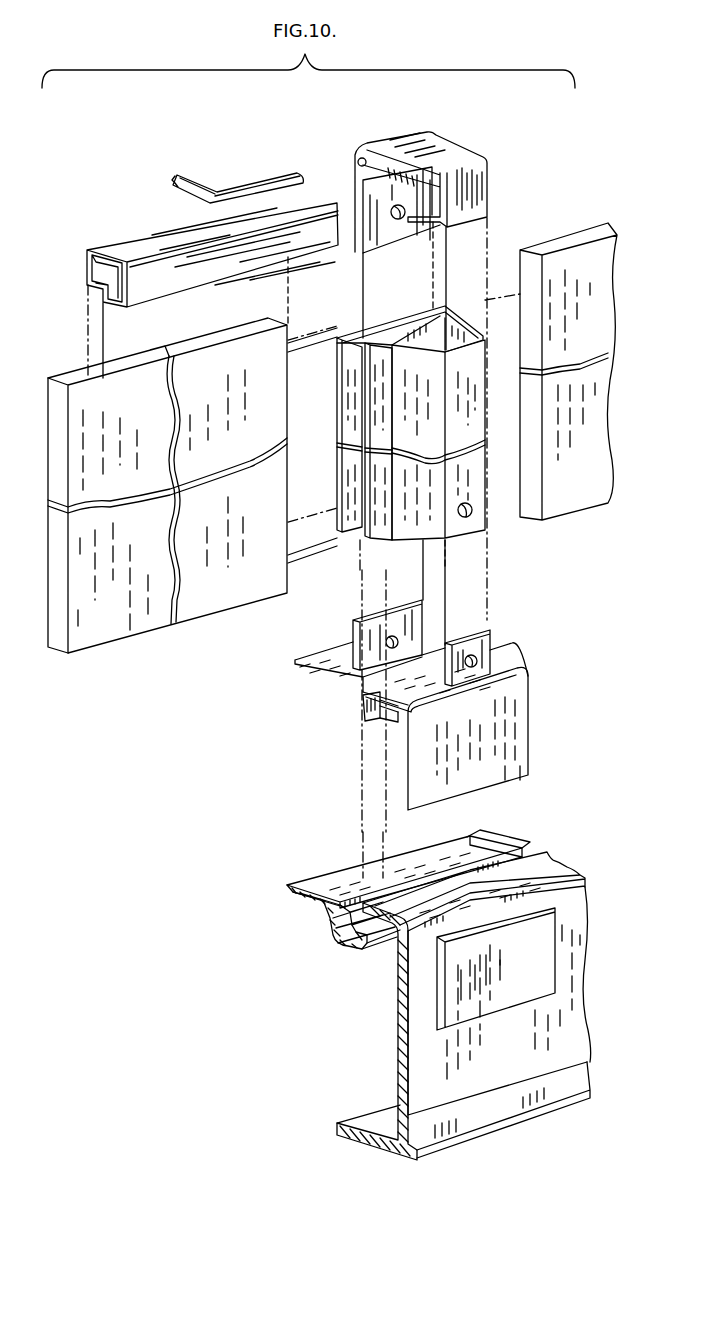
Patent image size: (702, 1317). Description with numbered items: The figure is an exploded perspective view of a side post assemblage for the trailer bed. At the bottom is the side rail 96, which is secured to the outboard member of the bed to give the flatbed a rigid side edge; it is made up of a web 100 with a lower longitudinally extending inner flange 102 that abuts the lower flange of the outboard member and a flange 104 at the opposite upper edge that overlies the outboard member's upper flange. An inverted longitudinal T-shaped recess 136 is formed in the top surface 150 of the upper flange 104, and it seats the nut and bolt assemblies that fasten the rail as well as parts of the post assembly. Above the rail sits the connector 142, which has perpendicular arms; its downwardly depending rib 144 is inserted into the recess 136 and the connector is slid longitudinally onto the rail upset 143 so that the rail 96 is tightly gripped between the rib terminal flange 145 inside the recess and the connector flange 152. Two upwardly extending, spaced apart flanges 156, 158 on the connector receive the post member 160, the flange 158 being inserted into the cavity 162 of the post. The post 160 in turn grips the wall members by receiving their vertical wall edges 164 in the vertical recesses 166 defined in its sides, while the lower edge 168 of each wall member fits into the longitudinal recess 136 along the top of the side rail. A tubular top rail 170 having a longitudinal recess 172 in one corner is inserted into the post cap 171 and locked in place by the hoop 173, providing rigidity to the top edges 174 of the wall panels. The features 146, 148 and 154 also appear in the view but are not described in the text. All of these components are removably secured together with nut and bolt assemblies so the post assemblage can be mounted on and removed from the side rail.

The side rail 96 is at (570, 952).
The web 100 is at (402, 1012).
The lower longitudinally extending inner flange 102 is at (358, 1115).
The flange 104 is at (337, 875).
The inverted longitudinal T-shaped recess 136 is at (345, 948).
The connector 142 is at (515, 710).
The rail upset 143 is at (543, 982).
The downwardly depending rib 144 is at (363, 707).
The rib terminal flange 145 is at (387, 727).
The clip flange 146 is at (363, 722).
The hook lip 148 is at (347, 950).
The top surface 150 is at (483, 837).
The connector flange 152 is at (512, 753).
The top flange of beam 154 is at (552, 867).
The upwardly extending flange 156 is at (484, 650).
The upwardly extending flange 158 is at (413, 623).
The post member 160 is at (477, 522).
The cavity 162 is at (427, 333).
The vertical wall edges 164 is at (277, 500).
The vertical recesses 166 is at (357, 343).
The lower edge 168 is at (140, 622).
The tubular top rail 170 is at (138, 248).
The post cap 171 is at (480, 192).
The longitudinal recess 172 is at (96, 292).
The hoop 173 is at (272, 183).
The top edges 174 is at (231, 346).